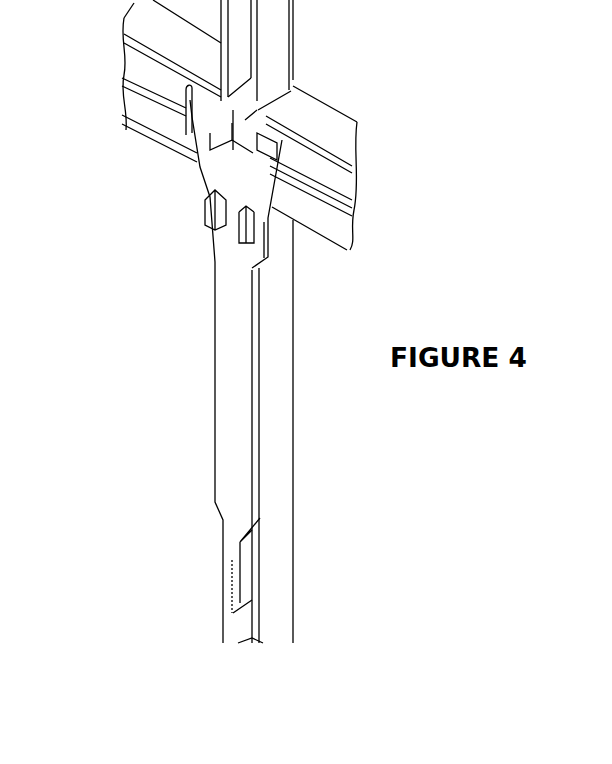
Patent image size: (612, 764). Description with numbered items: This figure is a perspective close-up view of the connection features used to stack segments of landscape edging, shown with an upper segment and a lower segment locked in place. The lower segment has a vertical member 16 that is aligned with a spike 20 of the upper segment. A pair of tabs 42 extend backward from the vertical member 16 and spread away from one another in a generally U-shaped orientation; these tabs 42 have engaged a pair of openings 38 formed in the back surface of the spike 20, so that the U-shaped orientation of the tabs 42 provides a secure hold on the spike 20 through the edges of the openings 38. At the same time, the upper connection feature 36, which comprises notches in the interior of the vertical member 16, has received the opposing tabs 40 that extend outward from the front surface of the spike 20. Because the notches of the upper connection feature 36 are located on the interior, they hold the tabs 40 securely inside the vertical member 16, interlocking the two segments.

The vertical member 16 is at (247, 362).
The spike 20 is at (187, 409).
The upper stacking connection feature 36 is at (250, 568).
The openings 38 is at (209, 212).
The tabs 40 is at (178, 602).
The tabs 42 is at (177, 237).